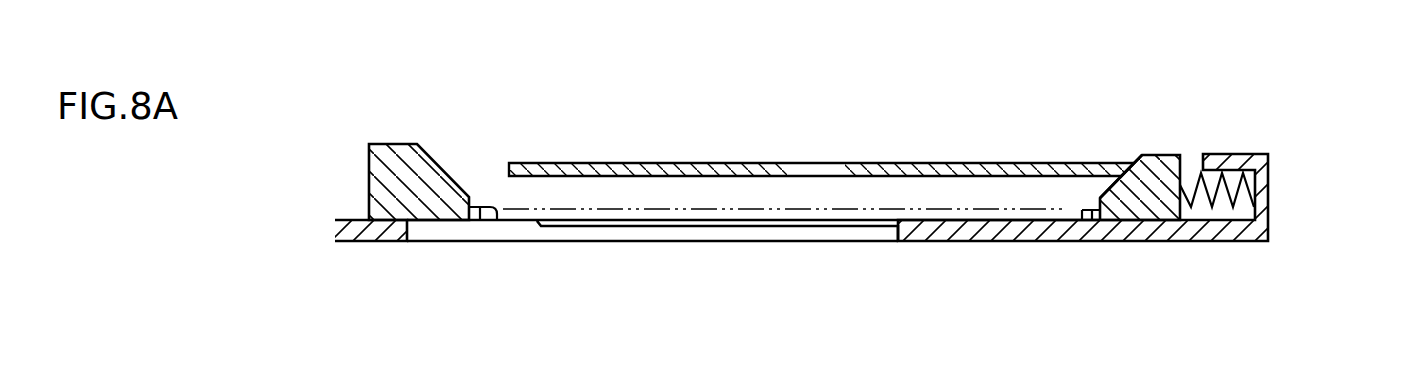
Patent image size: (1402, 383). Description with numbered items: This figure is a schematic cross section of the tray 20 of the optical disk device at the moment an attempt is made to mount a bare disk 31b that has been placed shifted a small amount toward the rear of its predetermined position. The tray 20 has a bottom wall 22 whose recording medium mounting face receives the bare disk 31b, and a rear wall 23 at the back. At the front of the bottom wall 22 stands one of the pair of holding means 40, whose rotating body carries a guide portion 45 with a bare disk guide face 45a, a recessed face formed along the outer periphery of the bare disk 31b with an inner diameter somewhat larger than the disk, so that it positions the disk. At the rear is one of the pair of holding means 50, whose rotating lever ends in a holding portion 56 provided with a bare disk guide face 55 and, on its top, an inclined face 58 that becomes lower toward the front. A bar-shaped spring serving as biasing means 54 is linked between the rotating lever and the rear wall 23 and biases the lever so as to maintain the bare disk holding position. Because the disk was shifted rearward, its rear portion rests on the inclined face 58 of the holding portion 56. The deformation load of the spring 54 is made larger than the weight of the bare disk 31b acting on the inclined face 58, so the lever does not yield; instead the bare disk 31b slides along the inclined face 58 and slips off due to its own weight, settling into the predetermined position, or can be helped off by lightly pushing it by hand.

The tray 20 is at (355, 228).
The bottom wall 22 is at (402, 228).
The rear wall 23 is at (1263, 190).
The holding means 40 is at (353, 156).
The guide portion 45 is at (399, 160).
The bare disk guide face 45a is at (480, 207).
The bare disk 31b is at (733, 163).
The holding portion 56 is at (1143, 210).
The inclined face 58 is at (1127, 163).
The bare disk guide face 55 is at (1090, 213).
The biasing means 54 is at (1242, 198).
The holding means 50 is at (1186, 144).